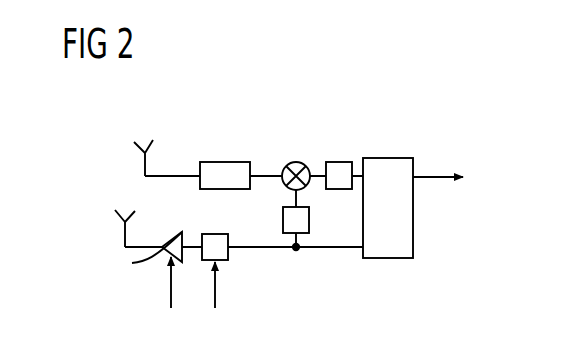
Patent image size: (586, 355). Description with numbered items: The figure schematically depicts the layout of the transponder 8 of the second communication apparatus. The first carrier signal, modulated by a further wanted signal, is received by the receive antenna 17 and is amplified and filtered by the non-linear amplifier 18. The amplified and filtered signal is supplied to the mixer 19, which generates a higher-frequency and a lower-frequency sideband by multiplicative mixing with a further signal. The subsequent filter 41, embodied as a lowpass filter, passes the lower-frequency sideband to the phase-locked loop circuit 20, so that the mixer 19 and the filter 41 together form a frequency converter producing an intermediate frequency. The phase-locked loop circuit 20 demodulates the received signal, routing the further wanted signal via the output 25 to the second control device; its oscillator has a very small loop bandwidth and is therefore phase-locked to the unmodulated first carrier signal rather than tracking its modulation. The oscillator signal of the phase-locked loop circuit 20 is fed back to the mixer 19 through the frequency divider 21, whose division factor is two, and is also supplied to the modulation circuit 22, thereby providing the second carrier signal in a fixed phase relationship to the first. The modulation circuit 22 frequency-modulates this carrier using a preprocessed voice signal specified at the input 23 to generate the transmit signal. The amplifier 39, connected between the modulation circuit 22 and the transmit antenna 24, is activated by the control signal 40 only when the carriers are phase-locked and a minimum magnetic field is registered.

The transponder 8 is at (324, 88).
The receive antenna 17 is at (140, 148).
The non-linear amplifier 18 is at (223, 162).
The mixer 19 is at (297, 161).
The lowpass filter 41 is at (340, 162).
The phase-locked loop circuit 20 is at (386, 158).
The output 25 is at (432, 177).
The frequency divider 21 is at (283, 219).
The transmit antenna 24 is at (120, 217).
The amplifier 39 is at (176, 236).
The modulation circuit 22 is at (228, 256).
The control signal 40 is at (171, 286).
The input 23 is at (215, 289).